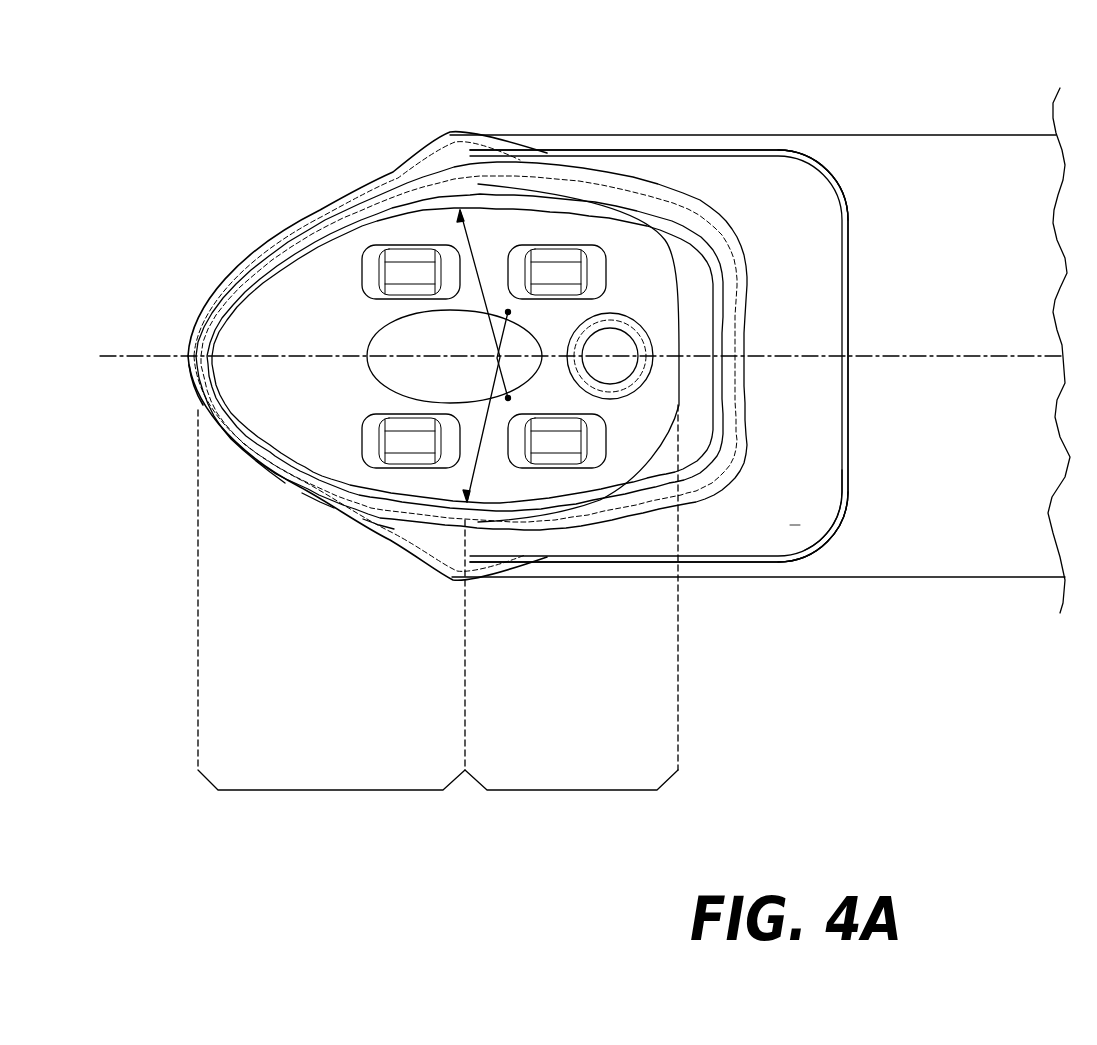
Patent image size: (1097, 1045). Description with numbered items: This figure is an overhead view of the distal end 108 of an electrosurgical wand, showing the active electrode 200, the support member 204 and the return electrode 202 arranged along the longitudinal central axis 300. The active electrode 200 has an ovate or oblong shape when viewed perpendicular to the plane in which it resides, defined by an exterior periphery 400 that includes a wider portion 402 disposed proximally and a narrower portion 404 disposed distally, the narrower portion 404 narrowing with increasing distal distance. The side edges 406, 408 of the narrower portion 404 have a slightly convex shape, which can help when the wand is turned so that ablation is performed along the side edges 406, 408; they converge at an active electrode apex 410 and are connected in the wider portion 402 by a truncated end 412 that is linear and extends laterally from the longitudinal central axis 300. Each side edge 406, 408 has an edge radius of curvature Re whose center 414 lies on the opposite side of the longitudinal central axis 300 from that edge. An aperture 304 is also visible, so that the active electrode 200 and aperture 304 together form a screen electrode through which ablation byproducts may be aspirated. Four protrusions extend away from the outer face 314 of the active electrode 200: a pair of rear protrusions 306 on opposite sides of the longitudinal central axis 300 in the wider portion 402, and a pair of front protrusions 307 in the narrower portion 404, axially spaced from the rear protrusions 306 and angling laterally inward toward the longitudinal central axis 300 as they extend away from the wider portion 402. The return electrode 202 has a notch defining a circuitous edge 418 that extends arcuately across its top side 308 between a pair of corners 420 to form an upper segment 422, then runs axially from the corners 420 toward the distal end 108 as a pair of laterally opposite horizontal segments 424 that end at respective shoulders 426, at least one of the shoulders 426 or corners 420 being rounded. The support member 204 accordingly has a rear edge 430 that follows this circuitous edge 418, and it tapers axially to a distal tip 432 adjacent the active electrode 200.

The distal end 108 is at (190, 365).
The active electrode 200 is at (650, 236).
The return electrode 202 is at (997, 133).
The support member 204 is at (795, 542).
The longitudinal central axis 300 is at (112, 356).
The aperture 304 is at (345, 425).
The rear protrusions 306 is at (590, 246).
The front protrusions 307 is at (420, 246).
The top side 308 is at (940, 287).
The outer face 314 is at (277, 417).
The exterior periphery 400 is at (374, 372).
The wider portion 402 is at (570, 797).
The narrower portion 404 is at (323, 793).
The side edge 406 is at (317, 467).
The side edge 408 is at (333, 230).
The active electrode apex 410 is at (200, 347).
The truncated end 412 is at (680, 404).
The center 414 is at (508, 312).
The circuitous edge 418 is at (851, 530).
The corners 420 is at (840, 136).
The upper segment 422 is at (850, 317).
The horizontal segments 424 is at (735, 149).
The shoulders 426 is at (505, 545).
The rear edge 430 is at (762, 523).
The distal tip 432 is at (190, 347).
The edge radius of curvature Re is at (467, 235).